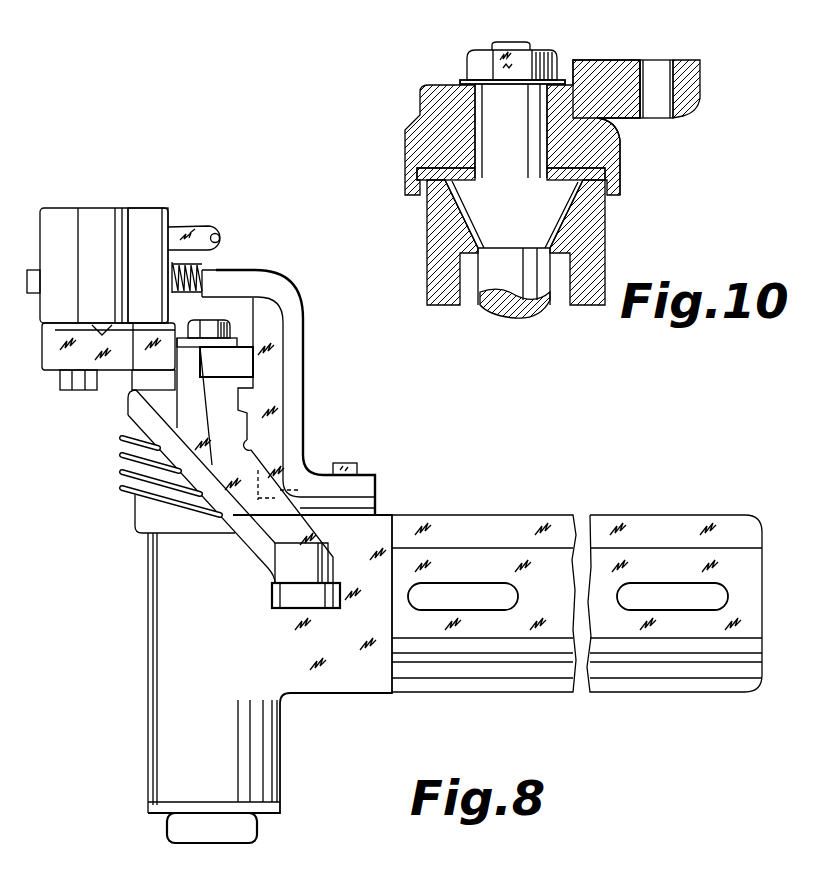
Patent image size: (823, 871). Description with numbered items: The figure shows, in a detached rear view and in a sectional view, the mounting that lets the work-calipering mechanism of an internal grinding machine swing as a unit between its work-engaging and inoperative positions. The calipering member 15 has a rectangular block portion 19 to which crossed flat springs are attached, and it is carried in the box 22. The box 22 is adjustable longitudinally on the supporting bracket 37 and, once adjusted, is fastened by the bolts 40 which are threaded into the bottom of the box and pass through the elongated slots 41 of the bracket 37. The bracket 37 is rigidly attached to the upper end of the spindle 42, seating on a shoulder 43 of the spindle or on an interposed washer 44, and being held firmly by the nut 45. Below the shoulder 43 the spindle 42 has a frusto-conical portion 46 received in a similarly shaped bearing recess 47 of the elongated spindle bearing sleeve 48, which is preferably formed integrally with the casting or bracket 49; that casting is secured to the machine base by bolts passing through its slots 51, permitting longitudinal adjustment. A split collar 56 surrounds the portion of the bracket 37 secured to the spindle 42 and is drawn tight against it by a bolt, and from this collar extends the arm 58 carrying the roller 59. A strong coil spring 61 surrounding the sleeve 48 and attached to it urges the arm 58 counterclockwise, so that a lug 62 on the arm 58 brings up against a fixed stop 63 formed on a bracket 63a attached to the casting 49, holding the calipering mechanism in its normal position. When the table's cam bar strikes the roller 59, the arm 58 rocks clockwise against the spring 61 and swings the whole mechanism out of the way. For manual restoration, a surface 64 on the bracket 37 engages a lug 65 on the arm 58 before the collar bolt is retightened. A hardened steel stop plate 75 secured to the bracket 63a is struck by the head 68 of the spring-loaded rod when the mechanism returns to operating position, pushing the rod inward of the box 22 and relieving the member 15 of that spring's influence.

In FIG. 8, the rectangular block portion 19 is at (138, 215).
In FIG. 8, the member 15 is at (190, 232).
In FIG. 8, the head 68 is at (200, 268).
In FIG. 8, the stop plate 75 is at (203, 287).
In FIG. 8, the nut 45 is at (233, 326).
In FIG. 10, the nut 45 is at (543, 56).
In FIG. 8, the surface 64 is at (180, 334).
In FIG. 8, the box 22 is at (48, 312).
In FIG. 8, the supporting bracket 37 is at (55, 348).
In FIG. 10, the supporting bracket 37 is at (625, 62).
In FIG. 8, the bolts 40 is at (73, 386).
In FIG. 8, the lug 65 is at (182, 380).
In FIG. 8, the lug 62 is at (241, 420).
In FIG. 8, the fixed stop 63 is at (253, 432).
In FIG. 8, the bracket 63a is at (305, 449).
In FIG. 8, the coil spring 61 is at (125, 490).
In FIG. 8, the arm 58 is at (265, 550).
In FIG. 8, the roller 59 is at (315, 590).
In FIG. 8, the spindle bearing sleeve 48 is at (162, 768).
In FIG. 10, the spindle bearing sleeve 48 is at (437, 254).
In FIG. 8, the casting or bracket 49 is at (530, 522).
In FIG. 8, the slots 51 is at (690, 610).
In FIG. 10, the elongated slots 41 is at (655, 68).
In FIG. 10, the shoulder 43 is at (447, 173).
In FIG. 10, the split collar 56 is at (621, 146).
In FIG. 10, the washer 44 is at (620, 174).
In FIG. 10, the bearing recess 47 is at (463, 219).
In FIG. 10, the frusto-conical portion 46 is at (570, 218).
In FIG. 10, the spindle 42 is at (540, 297).